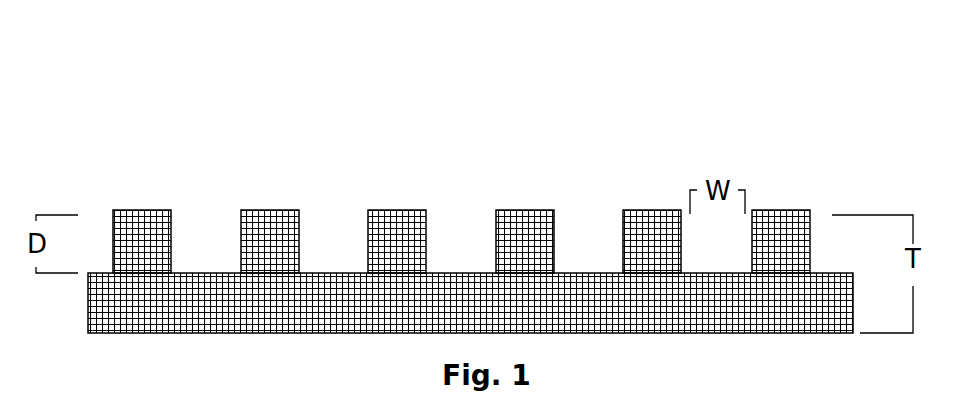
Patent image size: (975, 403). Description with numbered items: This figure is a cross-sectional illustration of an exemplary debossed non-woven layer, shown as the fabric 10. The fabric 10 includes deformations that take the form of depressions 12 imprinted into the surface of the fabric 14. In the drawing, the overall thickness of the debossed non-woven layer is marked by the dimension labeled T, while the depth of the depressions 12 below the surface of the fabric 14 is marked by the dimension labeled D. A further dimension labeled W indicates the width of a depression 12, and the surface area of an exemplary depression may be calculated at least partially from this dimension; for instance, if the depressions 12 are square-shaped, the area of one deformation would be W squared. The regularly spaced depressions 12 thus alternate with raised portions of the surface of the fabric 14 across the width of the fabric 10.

The fabric 10 is at (143, 160).
The depressions 12 is at (208, 224).
The surface of the fabric 14 is at (777, 196).